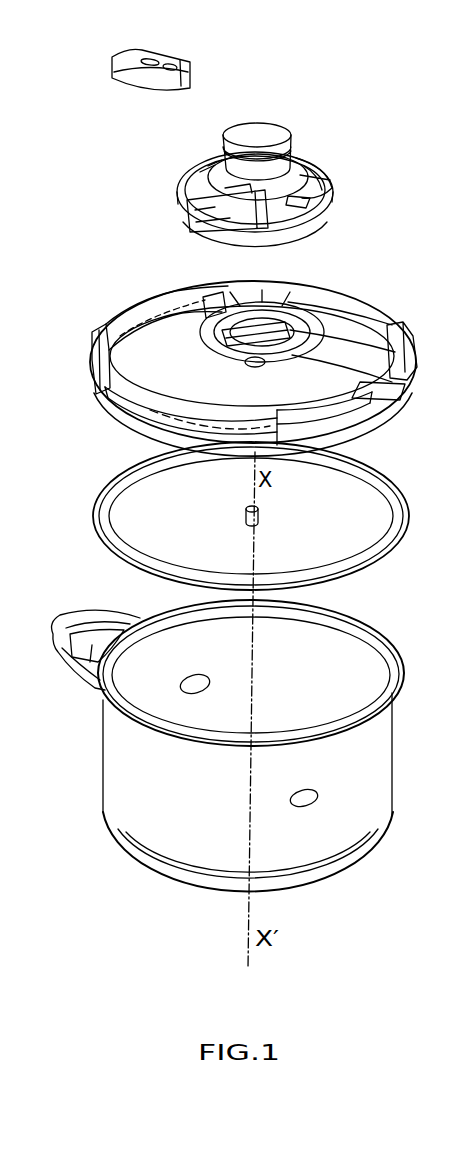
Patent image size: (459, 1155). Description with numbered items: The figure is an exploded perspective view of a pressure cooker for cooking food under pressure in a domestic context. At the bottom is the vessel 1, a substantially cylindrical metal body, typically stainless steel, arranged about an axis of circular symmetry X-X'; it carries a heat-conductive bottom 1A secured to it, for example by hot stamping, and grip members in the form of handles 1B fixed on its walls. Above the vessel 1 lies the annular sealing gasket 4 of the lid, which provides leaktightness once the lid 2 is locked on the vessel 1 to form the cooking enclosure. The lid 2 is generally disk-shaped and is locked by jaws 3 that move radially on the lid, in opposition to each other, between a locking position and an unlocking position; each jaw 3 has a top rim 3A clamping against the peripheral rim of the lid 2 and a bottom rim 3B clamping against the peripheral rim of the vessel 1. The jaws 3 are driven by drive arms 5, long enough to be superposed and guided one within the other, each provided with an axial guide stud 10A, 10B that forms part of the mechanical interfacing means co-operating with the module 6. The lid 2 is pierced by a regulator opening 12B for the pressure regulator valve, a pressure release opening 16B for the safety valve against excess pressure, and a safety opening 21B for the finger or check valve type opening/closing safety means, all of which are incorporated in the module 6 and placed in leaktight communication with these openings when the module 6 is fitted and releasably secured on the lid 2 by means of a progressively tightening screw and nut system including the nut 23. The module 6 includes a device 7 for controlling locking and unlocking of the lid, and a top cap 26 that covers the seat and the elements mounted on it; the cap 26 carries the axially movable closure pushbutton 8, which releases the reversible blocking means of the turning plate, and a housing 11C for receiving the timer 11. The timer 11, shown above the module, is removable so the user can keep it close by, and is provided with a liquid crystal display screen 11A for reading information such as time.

The vessel 1 is at (130, 807).
The heat-conductive bottom 1A is at (210, 893).
The handles 1B is at (73, 612).
The lid 2 is at (123, 408).
The jaw 3 is at (98, 372).
The top rim of jaw 3A is at (407, 327).
The bottom rim of jaw 3B is at (397, 383).
The annular sealing gasket 4 is at (413, 520).
The drive arms 5 is at (127, 310).
The module 6 is at (298, 135).
The locking and unlocking control device 7 is at (300, 200).
The closure pushbutton 8 is at (255, 133).
The axial guide stud 10A is at (228, 298).
The axial guide stud 10B is at (298, 300).
The timer 11 is at (133, 80).
The liquid crystal display screen 11A is at (160, 57).
The housing 11C is at (188, 232).
The regulator opening 12B is at (290, 316).
The pressure release opening 16B is at (180, 420).
The safety opening 21B is at (256, 330).
The nut 23 is at (260, 513).
The top cap 26 is at (297, 173).